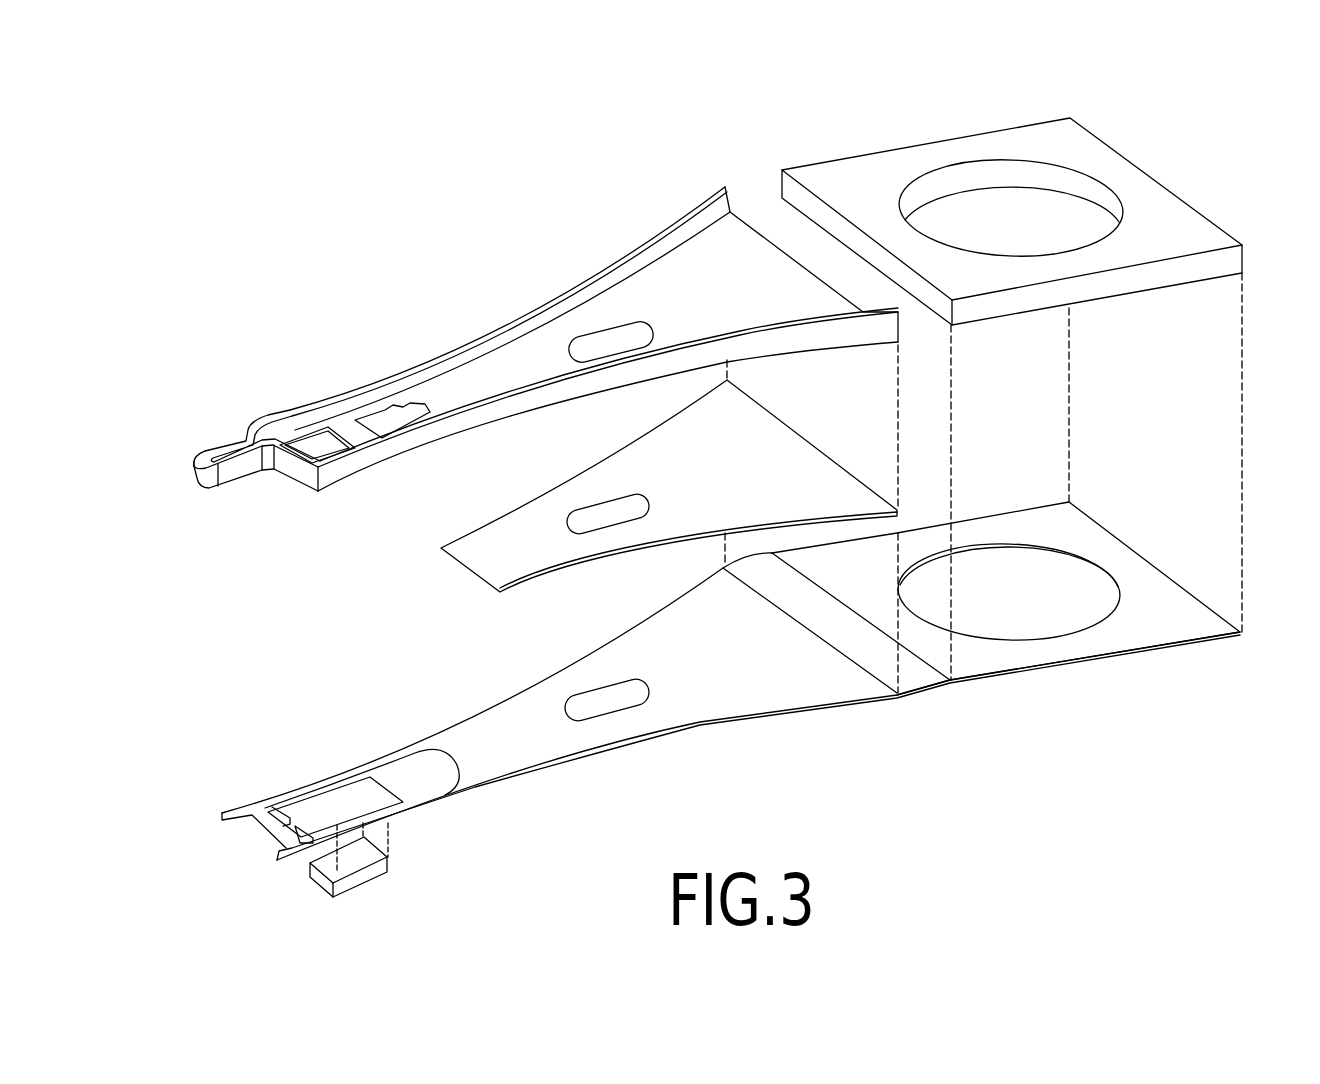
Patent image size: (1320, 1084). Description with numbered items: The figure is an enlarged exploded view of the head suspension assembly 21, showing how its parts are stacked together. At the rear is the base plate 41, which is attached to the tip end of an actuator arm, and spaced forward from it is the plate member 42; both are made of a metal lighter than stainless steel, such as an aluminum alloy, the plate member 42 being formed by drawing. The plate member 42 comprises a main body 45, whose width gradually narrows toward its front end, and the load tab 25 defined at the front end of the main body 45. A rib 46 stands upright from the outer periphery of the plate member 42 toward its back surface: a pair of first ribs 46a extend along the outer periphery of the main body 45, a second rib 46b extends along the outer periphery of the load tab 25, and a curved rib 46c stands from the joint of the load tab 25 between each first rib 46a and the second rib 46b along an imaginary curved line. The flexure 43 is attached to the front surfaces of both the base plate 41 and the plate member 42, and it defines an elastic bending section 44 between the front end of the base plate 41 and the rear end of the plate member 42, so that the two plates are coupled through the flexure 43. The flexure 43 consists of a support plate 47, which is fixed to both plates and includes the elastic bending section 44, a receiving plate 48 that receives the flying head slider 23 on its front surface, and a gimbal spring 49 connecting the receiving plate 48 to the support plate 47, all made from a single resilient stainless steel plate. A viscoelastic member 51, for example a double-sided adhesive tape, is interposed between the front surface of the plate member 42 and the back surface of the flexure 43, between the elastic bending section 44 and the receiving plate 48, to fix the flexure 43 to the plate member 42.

The head suspension assembly 21 is at (368, 270).
The flying head slider 23 is at (378, 890).
The load tab 25 is at (203, 490).
The base plate 41 is at (1200, 225).
The plate member 42 is at (316, 494).
The flexure 43 is at (473, 717).
The elastic bending section 44 is at (921, 690).
The main body 45 is at (745, 222).
The rib 46 is at (502, 317).
The first rib 46a is at (660, 229).
The second rib 46b is at (196, 452).
The curved rib 46c is at (270, 445).
The support plate 47 is at (577, 672).
The receiving plate 48 is at (357, 777).
The gimbal spring 49 is at (290, 820).
The viscoelastic member 51 is at (473, 538).